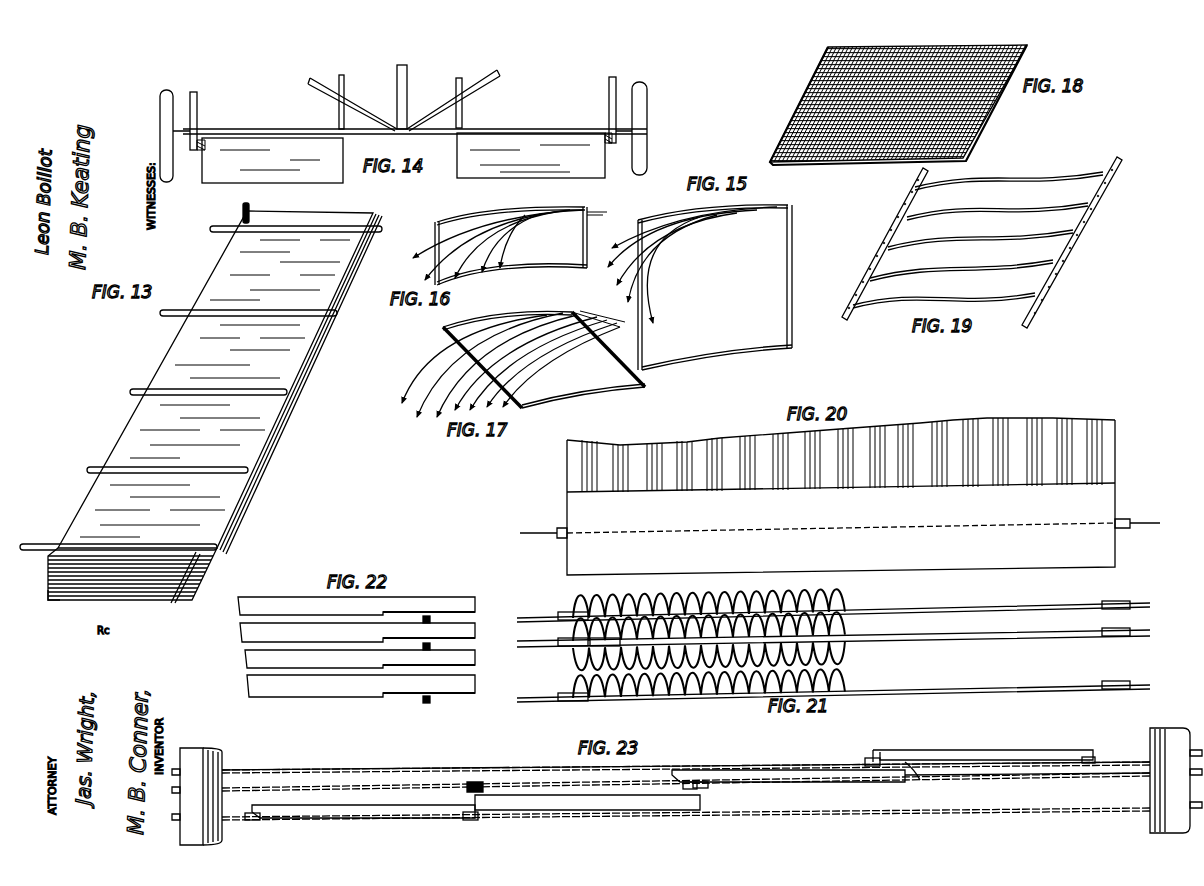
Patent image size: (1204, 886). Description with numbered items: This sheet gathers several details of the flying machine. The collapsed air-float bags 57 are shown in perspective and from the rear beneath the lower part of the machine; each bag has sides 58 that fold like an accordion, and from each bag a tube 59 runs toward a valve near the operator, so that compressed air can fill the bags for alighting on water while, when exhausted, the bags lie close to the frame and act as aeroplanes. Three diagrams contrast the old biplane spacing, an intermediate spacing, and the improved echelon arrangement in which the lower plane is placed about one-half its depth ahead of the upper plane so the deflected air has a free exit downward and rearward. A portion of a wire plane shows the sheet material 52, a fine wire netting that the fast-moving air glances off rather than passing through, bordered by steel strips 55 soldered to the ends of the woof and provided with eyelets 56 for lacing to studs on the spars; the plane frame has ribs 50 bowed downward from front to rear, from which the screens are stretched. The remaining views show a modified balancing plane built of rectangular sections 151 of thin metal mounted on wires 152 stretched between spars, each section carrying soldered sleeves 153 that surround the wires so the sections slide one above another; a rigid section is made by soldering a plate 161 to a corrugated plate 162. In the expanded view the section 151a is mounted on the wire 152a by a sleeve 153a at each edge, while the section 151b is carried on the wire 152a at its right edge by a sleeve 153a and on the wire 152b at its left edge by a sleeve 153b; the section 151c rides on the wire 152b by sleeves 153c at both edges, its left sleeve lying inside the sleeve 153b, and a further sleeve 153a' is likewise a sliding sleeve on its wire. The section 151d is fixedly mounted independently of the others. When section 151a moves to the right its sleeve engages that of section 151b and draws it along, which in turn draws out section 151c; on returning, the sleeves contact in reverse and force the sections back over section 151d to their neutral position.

In FIG. 19, the ribs 50 is at (1005, 175).
In FIG. 18, the sheet material 52 is at (850, 160).
In FIG. 18, the steel strips 55 is at (803, 100).
In FIG. 19, the steel strips 55 is at (881, 239).
In FIG. 19, the eyelets 56 is at (1053, 277).
In FIG. 13, the air-float bags 57 is at (215, 407).
In FIG. 14, the air-float bags 57 is at (403, 158).
In FIG. 13, the sides 58 is at (47, 594).
In FIG. 13, the tube 59 is at (243, 208).
In FIG. 14, the tube 59 is at (339, 112).
In FIG. 22, the rectangular sections 151 is at (447, 594).
In FIG. 22, the wires 152 is at (423, 703).
In FIG. 23, the wires 152 is at (433, 818).
In FIG. 22, the sleeves 153 is at (430, 702).
In FIG. 20, the plate 161 is at (840, 497).
In FIG. 21, the plate 161 is at (940, 598).
In FIG. 20, the corrugated plate 162 is at (841, 455).
In FIG. 21, the corrugated plate 162 is at (876, 597).
In FIG. 23, the section 151a is at (1020, 750).
In FIG. 23, the section 151b is at (815, 773).
In FIG. 23, the section 151c is at (625, 795).
In FIG. 23, the section 151d is at (375, 810).
In FIG. 23, the wire 152a is at (485, 768).
In FIG. 23, the wire 152b is at (1078, 776).
In FIG. 23, the sleeve 153a is at (981, 751).
In FIG. 23, the sleeve 153a' is at (939, 780).
In FIG. 23, the sleeve 153b is at (690, 789).
In FIG. 23, the sleeve 153c is at (468, 786).